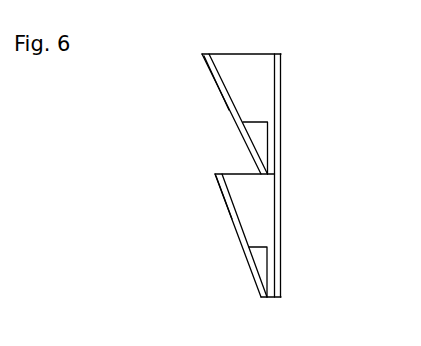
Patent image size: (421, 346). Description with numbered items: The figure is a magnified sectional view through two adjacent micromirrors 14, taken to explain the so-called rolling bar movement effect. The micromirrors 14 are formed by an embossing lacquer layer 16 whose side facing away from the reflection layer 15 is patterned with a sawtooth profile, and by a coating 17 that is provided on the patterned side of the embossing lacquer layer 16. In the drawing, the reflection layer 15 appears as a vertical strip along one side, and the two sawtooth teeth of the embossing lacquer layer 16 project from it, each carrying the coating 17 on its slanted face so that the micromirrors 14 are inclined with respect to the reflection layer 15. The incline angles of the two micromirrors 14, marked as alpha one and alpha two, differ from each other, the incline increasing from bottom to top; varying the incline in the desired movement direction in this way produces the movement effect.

The micromirror 14 is at (203, 78).
The reflection layer 15 is at (282, 212).
The embossing lacquer layer 16 is at (259, 184).
The coating 17 is at (229, 110).